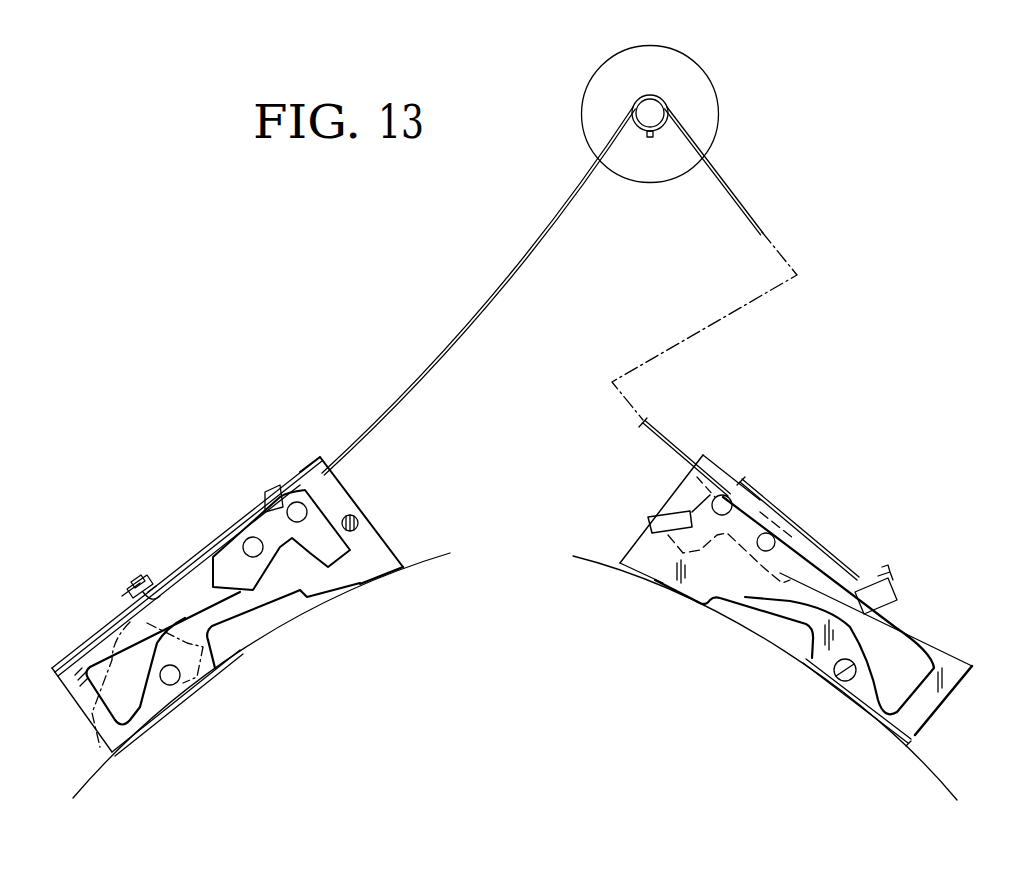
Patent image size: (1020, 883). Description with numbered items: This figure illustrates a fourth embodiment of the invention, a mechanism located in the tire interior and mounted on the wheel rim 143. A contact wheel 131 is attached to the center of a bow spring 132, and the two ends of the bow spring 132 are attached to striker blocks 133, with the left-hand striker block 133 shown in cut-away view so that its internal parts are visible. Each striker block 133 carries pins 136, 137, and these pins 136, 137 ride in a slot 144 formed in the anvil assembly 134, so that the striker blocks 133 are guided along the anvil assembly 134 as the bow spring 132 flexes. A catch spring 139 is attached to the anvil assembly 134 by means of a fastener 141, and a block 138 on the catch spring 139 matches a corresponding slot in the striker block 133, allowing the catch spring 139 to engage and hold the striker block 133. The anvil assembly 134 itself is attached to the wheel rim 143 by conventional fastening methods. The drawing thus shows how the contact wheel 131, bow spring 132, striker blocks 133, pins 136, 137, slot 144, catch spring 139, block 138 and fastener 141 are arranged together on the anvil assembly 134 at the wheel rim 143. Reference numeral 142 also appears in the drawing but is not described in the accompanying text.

The contact wheel 131 is at (705, 80).
The bow spring 132 is at (542, 228).
The striker block 133 is at (341, 547).
The anvil assembly 134 is at (345, 488).
The pin 136 is at (722, 498).
The pin 137 is at (775, 535).
The block 138 is at (252, 502).
The catch spring 139 is at (206, 542).
The fastener 141 is at (130, 578).
The channel member 142 is at (178, 683).
The wheel rim 143 is at (449, 558).
The slot 144 is at (892, 652).